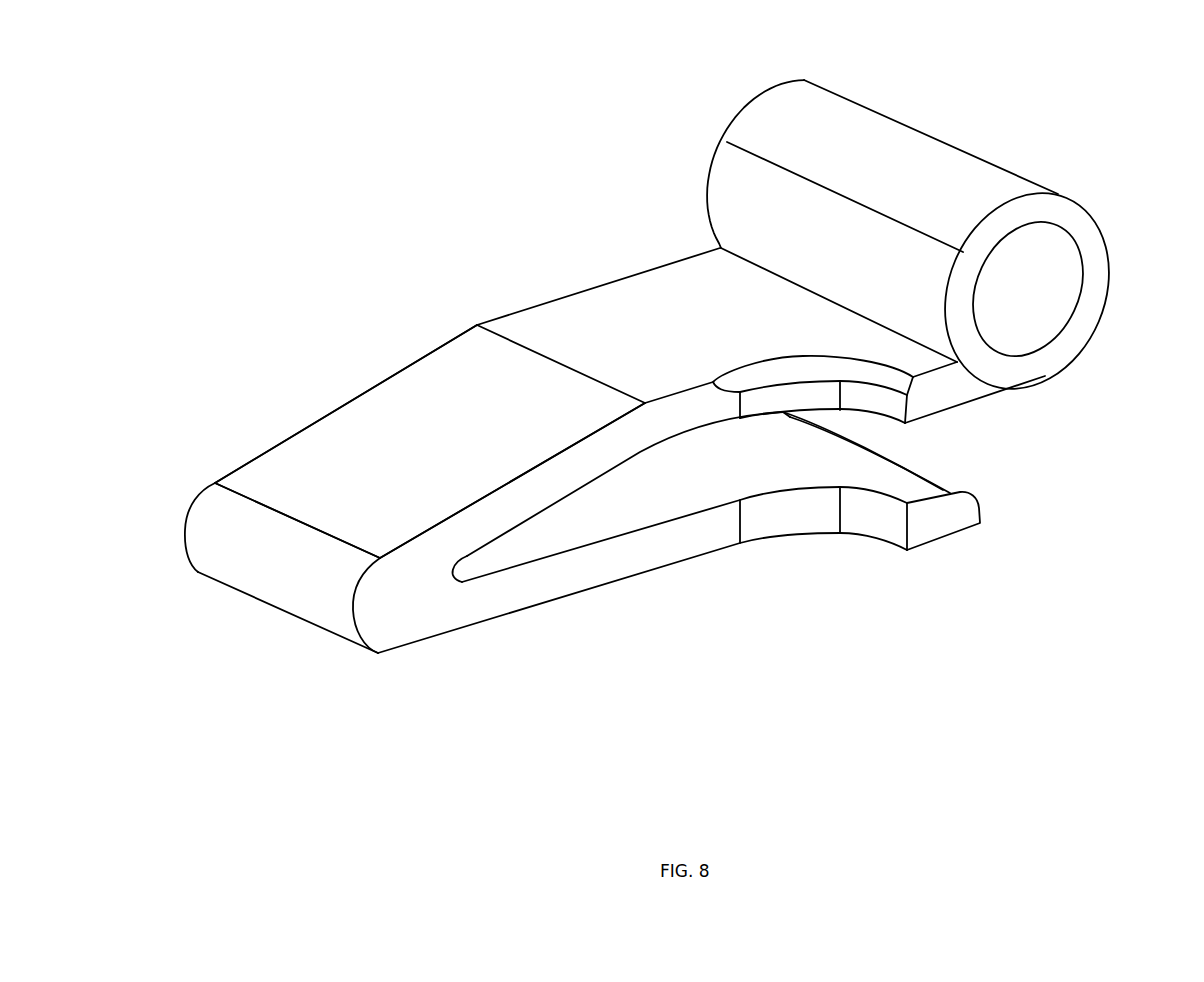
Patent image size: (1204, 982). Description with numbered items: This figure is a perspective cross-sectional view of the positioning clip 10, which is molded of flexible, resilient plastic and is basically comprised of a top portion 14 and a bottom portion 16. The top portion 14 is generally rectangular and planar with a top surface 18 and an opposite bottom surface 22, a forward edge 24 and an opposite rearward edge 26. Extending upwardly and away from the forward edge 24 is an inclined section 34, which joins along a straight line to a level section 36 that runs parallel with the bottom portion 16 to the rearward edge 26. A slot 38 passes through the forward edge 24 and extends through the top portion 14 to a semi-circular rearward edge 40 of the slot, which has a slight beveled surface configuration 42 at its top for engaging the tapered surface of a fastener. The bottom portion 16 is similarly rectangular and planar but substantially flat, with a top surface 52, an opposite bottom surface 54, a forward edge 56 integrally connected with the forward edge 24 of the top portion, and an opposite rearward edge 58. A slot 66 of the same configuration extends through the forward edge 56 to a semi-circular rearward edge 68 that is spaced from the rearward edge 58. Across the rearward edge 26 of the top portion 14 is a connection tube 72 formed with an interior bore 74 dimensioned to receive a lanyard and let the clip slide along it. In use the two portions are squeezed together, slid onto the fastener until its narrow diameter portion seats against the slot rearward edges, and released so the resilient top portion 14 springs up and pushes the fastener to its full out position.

The positioning clip 10 is at (1005, 135).
The top portion 14 is at (528, 305).
The bottom portion 16 is at (931, 548).
The top surface 18 is at (443, 382).
The bottom surface 22 is at (595, 483).
The forward edge 24 is at (223, 527).
The rearward edge 26 is at (960, 362).
The inclined section 34 is at (358, 430).
The level section 36 is at (595, 300).
The slot 38 is at (487, 517).
The rearward edge of the slot 40 is at (895, 405).
The beveled surface configuration 42 is at (738, 383).
The top surface 52 is at (518, 548).
The bottom surface 54 is at (700, 556).
The forward edge 56 is at (333, 637).
The rearward edge 58 is at (980, 513).
The slot 66 is at (413, 655).
The rearward edge of the slot 68 is at (890, 533).
The connection tube 72 is at (1030, 177).
The interior bore 74 is at (1086, 271).